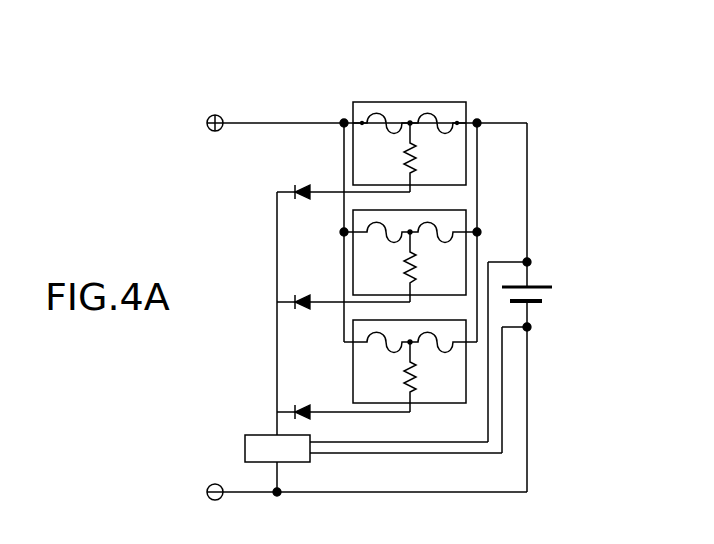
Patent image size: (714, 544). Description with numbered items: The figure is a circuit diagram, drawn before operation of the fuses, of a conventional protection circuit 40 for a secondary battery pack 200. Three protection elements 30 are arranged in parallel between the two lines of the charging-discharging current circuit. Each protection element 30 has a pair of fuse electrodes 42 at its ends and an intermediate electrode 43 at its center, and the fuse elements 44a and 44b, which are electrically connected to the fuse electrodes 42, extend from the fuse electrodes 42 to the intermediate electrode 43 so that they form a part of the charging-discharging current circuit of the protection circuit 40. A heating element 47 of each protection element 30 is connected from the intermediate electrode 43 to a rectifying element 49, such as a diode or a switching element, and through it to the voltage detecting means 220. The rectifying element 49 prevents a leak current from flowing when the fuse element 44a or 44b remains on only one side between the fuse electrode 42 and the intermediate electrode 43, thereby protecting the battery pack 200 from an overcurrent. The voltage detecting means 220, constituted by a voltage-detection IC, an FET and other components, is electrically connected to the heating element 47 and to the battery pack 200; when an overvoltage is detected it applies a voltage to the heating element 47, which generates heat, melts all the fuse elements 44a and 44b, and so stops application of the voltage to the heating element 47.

The protection circuit 40 is at (297, 121).
The protection element 30 is at (384, 184).
The fuse electrode 42 is at (365, 118).
The intermediate electrode 43 is at (410, 118).
The fuse element 44a is at (437, 119).
The fuse element 44b is at (393, 119).
The heating element 47 is at (418, 156).
The rectifying element 49 is at (343, 289).
The battery pack 200 is at (545, 294).
The voltage detecting means 220 is at (386, 362).